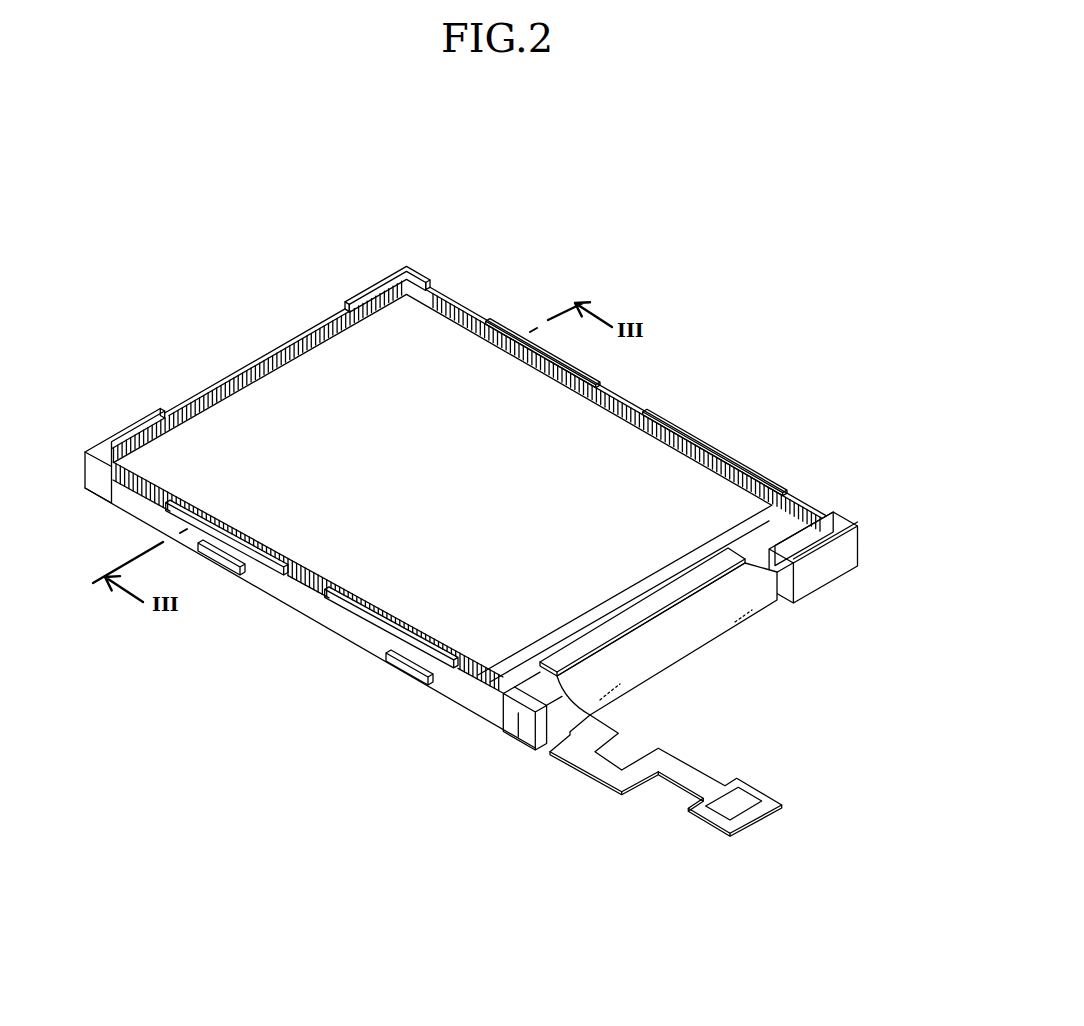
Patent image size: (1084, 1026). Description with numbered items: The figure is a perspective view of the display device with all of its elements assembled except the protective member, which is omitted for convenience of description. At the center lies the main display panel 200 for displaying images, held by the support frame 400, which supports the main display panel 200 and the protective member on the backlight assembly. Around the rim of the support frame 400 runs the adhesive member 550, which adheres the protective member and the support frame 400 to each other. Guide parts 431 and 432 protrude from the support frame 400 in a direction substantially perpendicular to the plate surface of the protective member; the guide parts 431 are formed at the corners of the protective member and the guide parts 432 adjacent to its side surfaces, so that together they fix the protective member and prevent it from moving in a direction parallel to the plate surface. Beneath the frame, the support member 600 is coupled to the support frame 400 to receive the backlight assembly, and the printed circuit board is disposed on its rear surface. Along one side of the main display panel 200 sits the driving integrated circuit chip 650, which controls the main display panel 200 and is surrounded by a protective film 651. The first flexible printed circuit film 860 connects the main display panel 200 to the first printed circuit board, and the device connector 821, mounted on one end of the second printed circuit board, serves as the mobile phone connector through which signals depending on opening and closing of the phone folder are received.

The main display panel 200 is at (305, 402).
The support frame 400 is at (863, 547).
The guide part 431 is at (395, 275).
The guide part 432 is at (604, 380).
The adhesive member 550 is at (460, 312).
The support member 600 is at (313, 610).
The driving integrated circuit chip 650 is at (713, 563).
The protective film 651 is at (787, 540).
The device connector 821 is at (737, 798).
The first flexible printed circuit film 860 is at (697, 642).